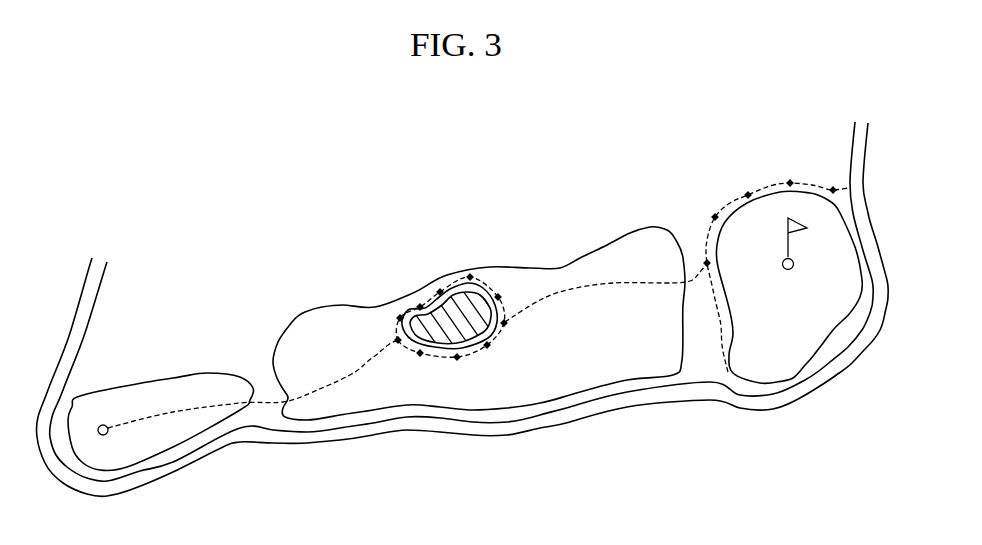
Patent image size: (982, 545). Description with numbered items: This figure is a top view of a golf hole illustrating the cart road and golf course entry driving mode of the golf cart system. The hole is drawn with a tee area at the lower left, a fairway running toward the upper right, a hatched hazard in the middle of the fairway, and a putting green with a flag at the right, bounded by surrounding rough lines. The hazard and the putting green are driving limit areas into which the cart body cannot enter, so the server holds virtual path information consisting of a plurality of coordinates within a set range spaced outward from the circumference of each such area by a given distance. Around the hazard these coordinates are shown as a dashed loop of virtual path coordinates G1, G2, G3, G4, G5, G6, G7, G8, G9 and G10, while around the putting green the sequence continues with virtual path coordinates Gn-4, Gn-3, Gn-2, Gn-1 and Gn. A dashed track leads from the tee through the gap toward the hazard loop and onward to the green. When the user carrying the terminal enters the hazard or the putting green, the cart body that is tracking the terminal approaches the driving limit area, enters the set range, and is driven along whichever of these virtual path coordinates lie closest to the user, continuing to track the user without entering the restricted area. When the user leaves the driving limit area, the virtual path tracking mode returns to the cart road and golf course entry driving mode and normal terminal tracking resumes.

The virtual path coordinate G1 is at (385, 341).
The virtual path coordinate G2 is at (414, 364).
The virtual path coordinate G3 is at (461, 367).
The virtual path coordinate G4 is at (496, 356).
The virtual path coordinate G5 is at (517, 325).
The virtual path coordinate G6 is at (509, 289).
The virtual path coordinate G7 is at (475, 268).
The virtual path coordinate G8 is at (431, 281).
The virtual path coordinate G9 is at (411, 298).
The virtual path coordinate G10 is at (385, 310).
The virtual path coordinate Gn-4 is at (689, 263).
The virtual path coordinate Gn-3 is at (696, 212).
The virtual path coordinate Gn-2 is at (748, 185).
The virtual path coordinate Gn-1 is at (792, 173).
The virtual path coordinate Gn is at (831, 178).